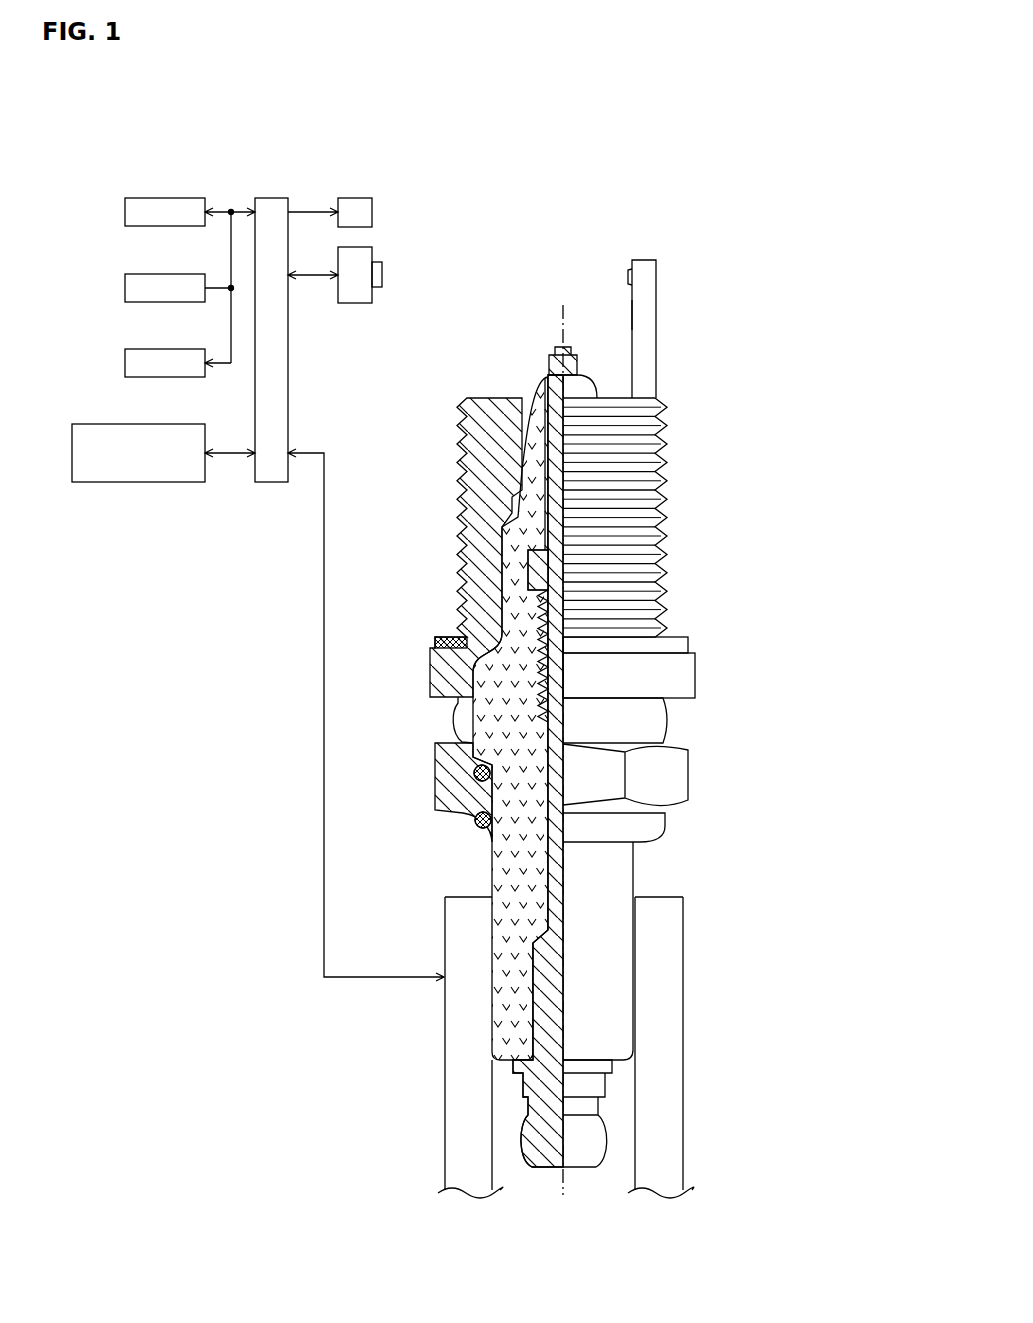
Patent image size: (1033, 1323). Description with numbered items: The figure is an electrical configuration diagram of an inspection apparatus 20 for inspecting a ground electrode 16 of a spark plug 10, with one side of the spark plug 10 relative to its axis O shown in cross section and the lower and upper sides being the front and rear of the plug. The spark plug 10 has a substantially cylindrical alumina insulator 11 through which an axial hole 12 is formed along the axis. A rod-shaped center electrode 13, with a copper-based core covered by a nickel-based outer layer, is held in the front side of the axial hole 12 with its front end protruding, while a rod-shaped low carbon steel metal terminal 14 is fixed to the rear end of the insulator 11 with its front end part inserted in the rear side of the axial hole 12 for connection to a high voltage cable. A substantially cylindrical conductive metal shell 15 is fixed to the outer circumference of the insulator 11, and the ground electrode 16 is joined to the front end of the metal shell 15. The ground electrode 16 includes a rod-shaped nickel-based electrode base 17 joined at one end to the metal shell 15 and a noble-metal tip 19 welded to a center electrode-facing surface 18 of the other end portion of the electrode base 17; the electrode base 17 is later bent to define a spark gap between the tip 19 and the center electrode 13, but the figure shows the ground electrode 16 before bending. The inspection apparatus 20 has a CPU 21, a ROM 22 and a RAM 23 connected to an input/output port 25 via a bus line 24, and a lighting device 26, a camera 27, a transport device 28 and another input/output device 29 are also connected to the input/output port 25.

The spark plug 10 is at (748, 325).
The insulator 11 is at (492, 855).
The axial hole 12 is at (543, 1025).
The center electrode 13 is at (553, 368).
The metal terminal 14 is at (585, 1138).
The metal shell 15 is at (686, 672).
The ground electrode 16 is at (681, 250).
The electrode base 17 is at (647, 322).
The center electrode-facing surface 18 is at (633, 302).
The tip 19 is at (628, 277).
The inspection apparatus 20 is at (319, 183).
The CPU 21 is at (197, 203).
The ROM 22 is at (197, 278).
The RAM 23 is at (197, 353).
The bus line 24 is at (238, 210).
The input/output port 25 is at (272, 475).
The lighting device 26 is at (353, 207).
The camera 27 is at (357, 297).
The transport device 28 is at (456, 1133).
The another input/output device 29 is at (188, 473).